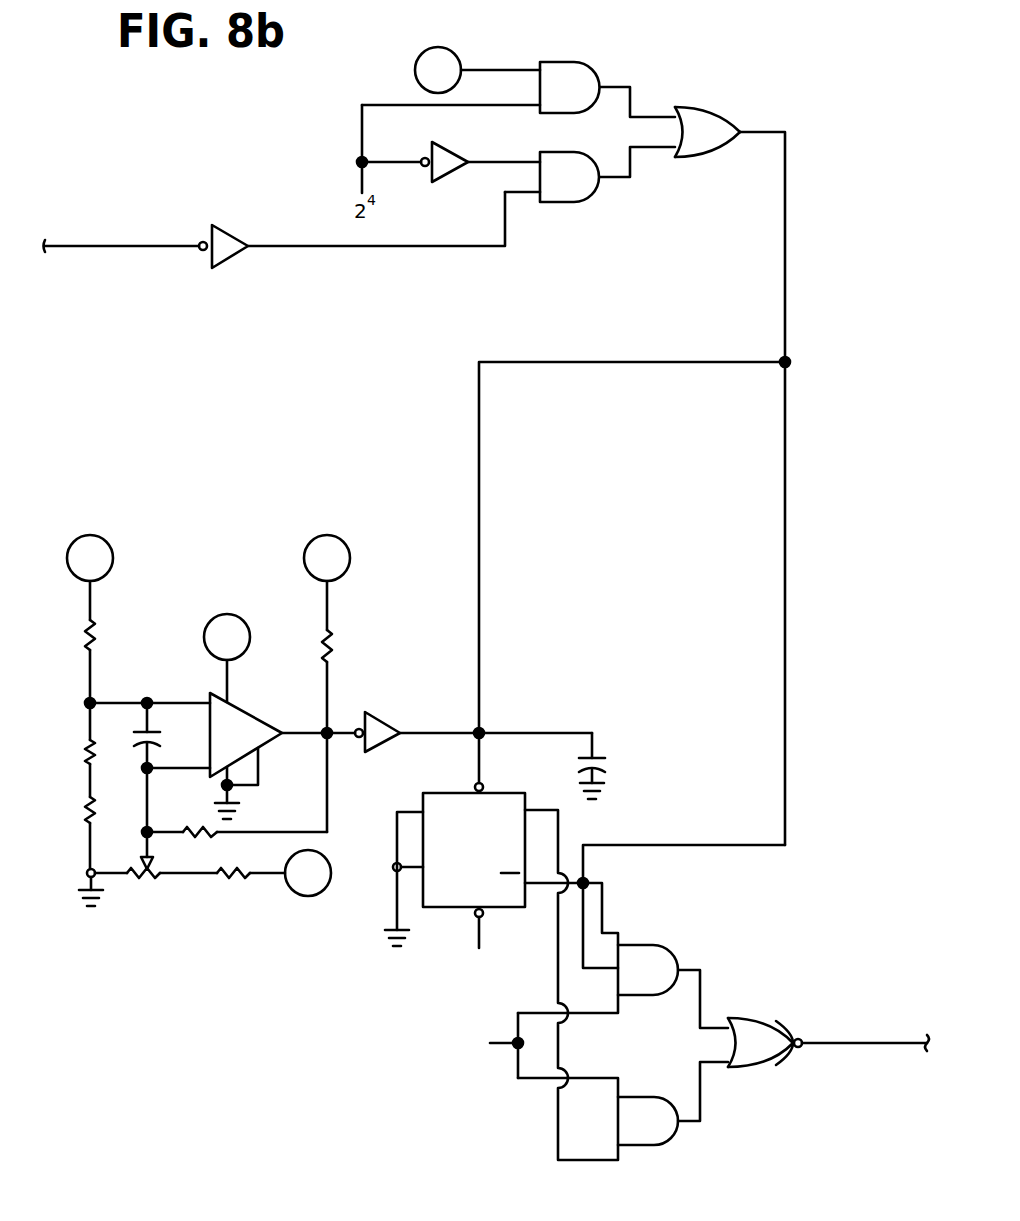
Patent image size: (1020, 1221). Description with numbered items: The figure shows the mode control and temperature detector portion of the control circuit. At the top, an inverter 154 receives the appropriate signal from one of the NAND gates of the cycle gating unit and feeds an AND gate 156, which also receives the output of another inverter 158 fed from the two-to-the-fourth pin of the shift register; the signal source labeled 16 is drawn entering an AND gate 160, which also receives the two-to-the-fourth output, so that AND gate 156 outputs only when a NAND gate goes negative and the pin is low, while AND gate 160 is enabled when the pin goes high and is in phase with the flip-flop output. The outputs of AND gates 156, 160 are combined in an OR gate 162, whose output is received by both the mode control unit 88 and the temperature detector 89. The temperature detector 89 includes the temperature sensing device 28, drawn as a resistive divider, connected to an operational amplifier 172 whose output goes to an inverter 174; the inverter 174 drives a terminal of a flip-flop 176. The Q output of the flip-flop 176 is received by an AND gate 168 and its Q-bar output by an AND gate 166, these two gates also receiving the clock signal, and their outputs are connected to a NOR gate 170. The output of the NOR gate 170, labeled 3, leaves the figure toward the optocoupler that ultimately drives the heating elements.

The signal input 16 is at (477, 70).
The inverter 154 is at (231, 258).
The AND gate 156 is at (585, 203).
The inverter 158 is at (447, 142).
The AND gate 160 is at (600, 65).
The OR gate 162 is at (722, 117).
The AND gate 166 is at (663, 946).
The AND gate 168 is at (657, 1097).
The NOR gate 170 is at (772, 1068).
The operational amplifier 172 is at (257, 712).
The inverter 174 is at (383, 720).
The flip-flop 176 is at (445, 792).
The temperature sensing device 28 is at (86, 752).
The mode control unit 88 is at (792, 972).
The temperature detector 89 is at (205, 562).
The output signal to FIG. 8c 3 is at (865, 1023).